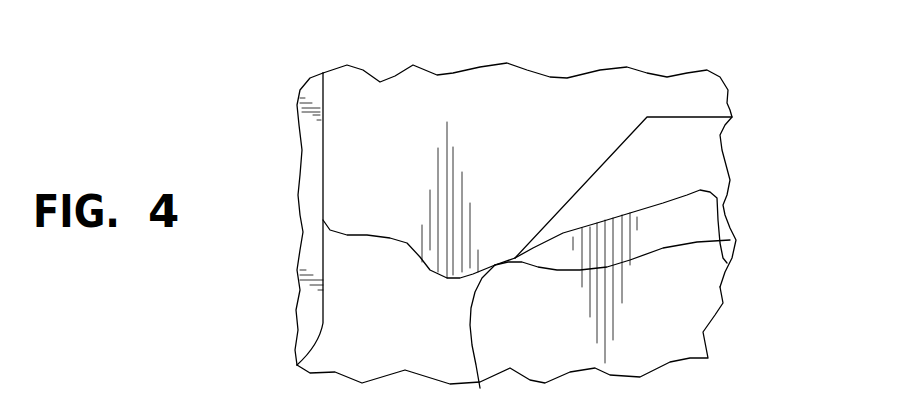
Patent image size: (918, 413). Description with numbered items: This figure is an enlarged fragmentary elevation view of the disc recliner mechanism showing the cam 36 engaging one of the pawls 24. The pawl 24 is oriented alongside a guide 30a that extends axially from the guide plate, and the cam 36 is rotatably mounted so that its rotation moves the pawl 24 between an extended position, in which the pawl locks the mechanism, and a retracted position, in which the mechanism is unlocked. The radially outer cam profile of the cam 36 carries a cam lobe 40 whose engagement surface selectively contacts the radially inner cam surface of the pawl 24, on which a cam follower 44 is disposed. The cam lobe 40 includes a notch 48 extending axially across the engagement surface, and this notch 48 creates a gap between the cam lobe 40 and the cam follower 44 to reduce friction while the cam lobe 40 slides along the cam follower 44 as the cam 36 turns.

The pawl 24 is at (686, 93).
The guide 30a is at (310, 137).
The cam 36 is at (699, 305).
The cam lobe 40 is at (534, 325).
The cam follower 44 is at (539, 177).
The notch 48 is at (730, 240).